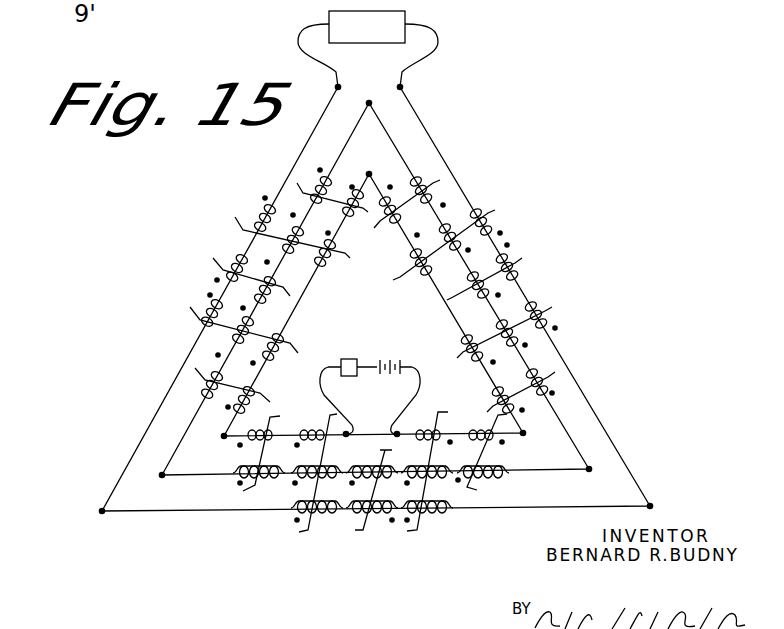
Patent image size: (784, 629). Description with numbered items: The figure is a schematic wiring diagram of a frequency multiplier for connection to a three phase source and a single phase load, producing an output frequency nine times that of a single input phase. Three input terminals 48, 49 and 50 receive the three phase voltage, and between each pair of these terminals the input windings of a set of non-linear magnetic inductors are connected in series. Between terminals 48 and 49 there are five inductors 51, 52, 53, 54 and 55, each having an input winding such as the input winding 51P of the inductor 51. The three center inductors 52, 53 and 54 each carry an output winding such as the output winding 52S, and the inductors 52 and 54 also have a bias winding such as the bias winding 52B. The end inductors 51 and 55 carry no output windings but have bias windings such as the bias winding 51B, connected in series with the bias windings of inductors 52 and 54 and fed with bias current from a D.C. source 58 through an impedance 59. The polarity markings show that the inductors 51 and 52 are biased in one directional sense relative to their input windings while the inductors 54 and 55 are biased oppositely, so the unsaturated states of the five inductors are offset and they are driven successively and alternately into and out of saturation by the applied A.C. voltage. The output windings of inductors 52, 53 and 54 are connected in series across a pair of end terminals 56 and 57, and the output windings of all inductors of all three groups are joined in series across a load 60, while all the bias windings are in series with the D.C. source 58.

The input terminal 48 is at (162, 475).
The input terminal 49 is at (589, 469).
The input terminal 50 is at (369, 103).
The inductor 51 is at (240, 462).
The bias winding 51B is at (277, 428).
The input winding 51P is at (299, 500).
The inductor 52 is at (273, 480).
The bias winding 52B is at (304, 430).
The output winding 52S is at (326, 520).
The inductor 53 is at (371, 533).
The inductor 54 is at (442, 492).
The inductor 55 is at (498, 459).
The end terminal 56 is at (102, 511).
The end terminal 57 is at (650, 506).
The D.C. source 58 is at (393, 357).
The impedance 59 is at (350, 358).
The load 60 is at (381, 37).